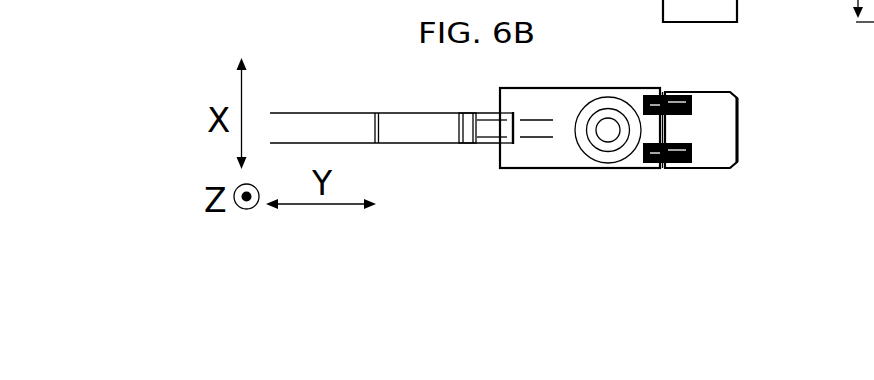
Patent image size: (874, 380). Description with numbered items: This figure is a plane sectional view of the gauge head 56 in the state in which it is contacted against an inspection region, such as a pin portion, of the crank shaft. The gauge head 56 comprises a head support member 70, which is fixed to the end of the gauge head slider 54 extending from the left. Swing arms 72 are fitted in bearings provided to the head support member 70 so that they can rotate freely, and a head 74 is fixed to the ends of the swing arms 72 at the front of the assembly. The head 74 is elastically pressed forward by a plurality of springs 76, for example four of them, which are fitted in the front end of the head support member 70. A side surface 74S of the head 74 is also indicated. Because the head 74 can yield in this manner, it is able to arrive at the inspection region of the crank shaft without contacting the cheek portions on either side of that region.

The gauge head slider 54 is at (400, 113).
The gauge head 56 is at (628, 216).
The head support member 70 is at (560, 88).
The swing arms 72 is at (607, 110).
The head 74 is at (724, 97).
The connector side surface 74S is at (738, 123).
The springs 76 is at (672, 94).